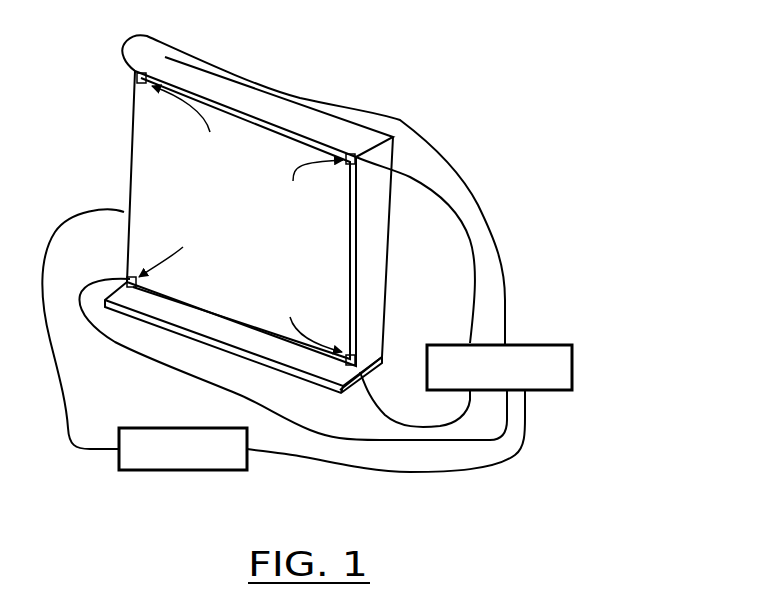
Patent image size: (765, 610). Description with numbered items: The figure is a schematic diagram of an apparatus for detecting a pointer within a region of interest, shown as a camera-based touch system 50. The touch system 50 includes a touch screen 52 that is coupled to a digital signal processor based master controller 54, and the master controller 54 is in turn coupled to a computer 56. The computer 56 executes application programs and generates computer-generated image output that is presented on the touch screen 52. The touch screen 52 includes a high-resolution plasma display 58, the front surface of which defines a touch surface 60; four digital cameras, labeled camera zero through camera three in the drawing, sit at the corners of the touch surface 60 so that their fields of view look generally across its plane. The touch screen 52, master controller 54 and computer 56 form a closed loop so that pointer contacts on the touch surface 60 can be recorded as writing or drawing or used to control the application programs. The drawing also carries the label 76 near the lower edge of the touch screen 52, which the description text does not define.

The touch system 50 is at (448, 106).
The touch screen 52 is at (300, 86).
The master controller 54 is at (444, 345).
The computer 56 is at (193, 470).
The plasma display 58 is at (373, 246).
The touch surface 60 is at (292, 267).
The bottom bezel / pen tray 76 is at (293, 359).